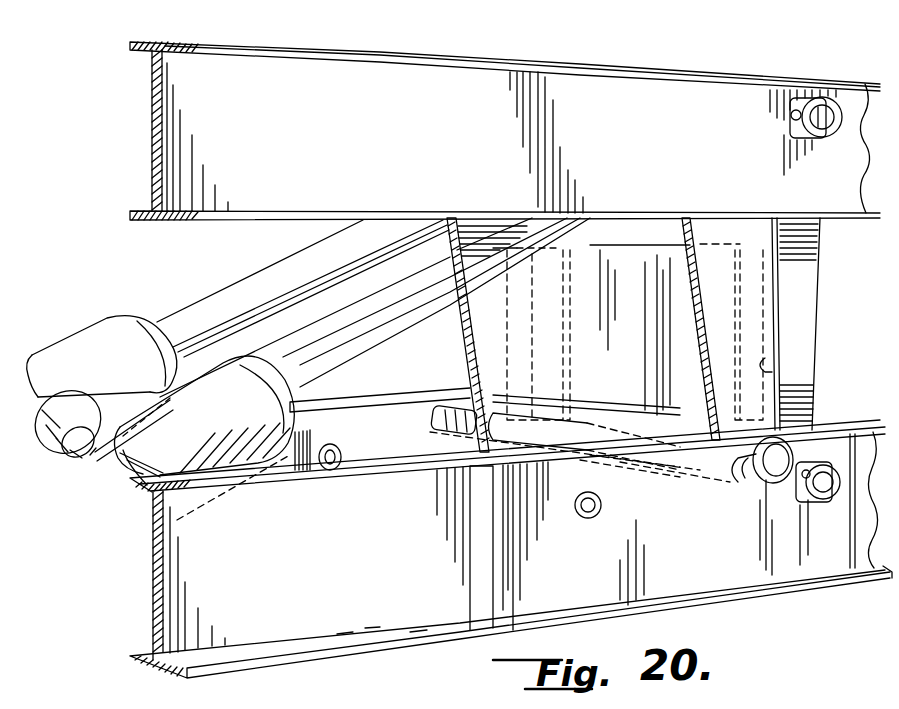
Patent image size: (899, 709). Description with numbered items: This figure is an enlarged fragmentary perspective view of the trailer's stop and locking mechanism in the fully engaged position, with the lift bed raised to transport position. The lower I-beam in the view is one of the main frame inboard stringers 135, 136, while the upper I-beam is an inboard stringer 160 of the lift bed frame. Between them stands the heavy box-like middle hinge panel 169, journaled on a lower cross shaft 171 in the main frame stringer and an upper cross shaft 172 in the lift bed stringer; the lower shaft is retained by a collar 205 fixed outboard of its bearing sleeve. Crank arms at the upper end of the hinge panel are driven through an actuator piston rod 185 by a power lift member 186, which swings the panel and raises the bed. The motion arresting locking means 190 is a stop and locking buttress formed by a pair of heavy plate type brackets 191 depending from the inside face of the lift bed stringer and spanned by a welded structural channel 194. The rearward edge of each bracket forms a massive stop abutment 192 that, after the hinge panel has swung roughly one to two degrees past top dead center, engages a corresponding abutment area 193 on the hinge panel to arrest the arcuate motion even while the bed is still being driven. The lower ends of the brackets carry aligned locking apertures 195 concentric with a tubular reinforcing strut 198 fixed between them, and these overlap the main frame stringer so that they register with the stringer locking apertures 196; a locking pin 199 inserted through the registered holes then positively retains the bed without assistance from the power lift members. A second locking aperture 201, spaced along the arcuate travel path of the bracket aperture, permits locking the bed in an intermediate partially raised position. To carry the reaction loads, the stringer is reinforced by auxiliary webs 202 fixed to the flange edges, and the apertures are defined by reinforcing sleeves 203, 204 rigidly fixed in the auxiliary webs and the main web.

The inboard stringer 135 is at (175, 598).
The inboard stringer 136 is at (458, 392).
The inboard stringer 160 is at (572, 92).
The middle hinge panel 169 is at (826, 293).
The lower cross shaft 171 is at (828, 500).
The cross shaft 172 is at (826, 106).
The actuator piston rod 185 is at (262, 283).
The power lift member 186 is at (78, 341).
The motion arresting locking means 190 is at (658, 226).
The plate type bracket 191 is at (455, 262).
The stop abutment 192 is at (772, 316).
The abutment area 193 is at (772, 372).
The structural channel 194 is at (628, 303).
The locking aperture 195 is at (697, 469).
The locking aperture 196 is at (474, 430).
The tubular reinforcing strut 198 is at (583, 415).
The locking pin 199 is at (778, 494).
The second locking aperture 201 is at (600, 509).
The auxiliary web 202 is at (705, 585).
The reinforcing sleeve 203 is at (742, 486).
The reinforcing sleeve 204 is at (320, 452).
The collar 205 is at (794, 128).